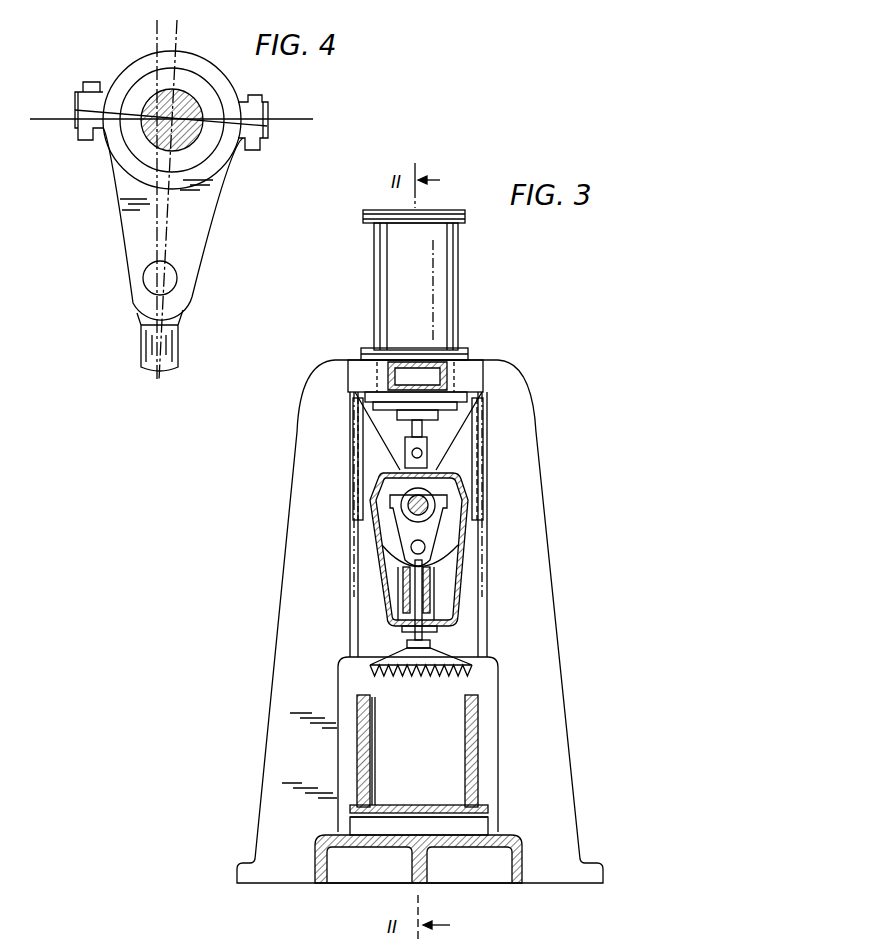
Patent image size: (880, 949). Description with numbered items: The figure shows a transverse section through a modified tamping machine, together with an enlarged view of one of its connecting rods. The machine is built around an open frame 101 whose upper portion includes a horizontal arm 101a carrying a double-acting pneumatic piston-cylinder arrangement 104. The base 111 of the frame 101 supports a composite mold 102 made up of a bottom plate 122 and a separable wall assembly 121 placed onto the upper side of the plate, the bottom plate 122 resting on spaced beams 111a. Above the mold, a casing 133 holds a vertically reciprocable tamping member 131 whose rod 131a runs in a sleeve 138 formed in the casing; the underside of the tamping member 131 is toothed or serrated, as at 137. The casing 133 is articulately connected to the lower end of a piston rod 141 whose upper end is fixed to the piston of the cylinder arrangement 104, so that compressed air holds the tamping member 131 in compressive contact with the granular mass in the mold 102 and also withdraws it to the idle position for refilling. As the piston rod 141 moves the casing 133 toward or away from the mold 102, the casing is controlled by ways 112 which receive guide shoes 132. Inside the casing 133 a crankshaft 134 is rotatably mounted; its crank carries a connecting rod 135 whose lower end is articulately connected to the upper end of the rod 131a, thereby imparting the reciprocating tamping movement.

In FIG. 3, the open frame 101 is at (543, 619).
In FIG. 3, the horizontal arm 101a is at (450, 372).
In FIG. 3, the composite mold 102 is at (485, 730).
In FIG. 3, the double-acting pneumatic piston-cylinder arrangement 104 is at (463, 304).
In FIG. 3, the base 111 is at (382, 837).
In FIG. 3, the spaced beams 111a is at (470, 823).
In FIG. 3, the ways 112 is at (481, 548).
In FIG. 3, the separable wall assembly 121 is at (475, 768).
In FIG. 3, the bottom plate 122 is at (487, 808).
In FIG. 3, the tamping member 131 is at (437, 655).
In FIG. 4, the rod 131a is at (170, 350).
In FIG. 3, the rod 131a is at (413, 633).
In FIG. 3, the guide shoes 132 is at (476, 472).
In FIG. 3, the casing 133 is at (442, 597).
In FIG. 4, the crankshaft 134 is at (147, 137).
In FIG. 3, the crankshaft 134 is at (408, 512).
In FIG. 4, the connecting rod 135 is at (190, 230).
In FIG. 3, the connecting rod 135 is at (425, 530).
In FIG. 3, the toothed or serrated tamping surface 137 is at (463, 672).
In FIG. 3, the sleeves 138 is at (432, 582).
In FIG. 3, the piston rod 141 is at (428, 425).